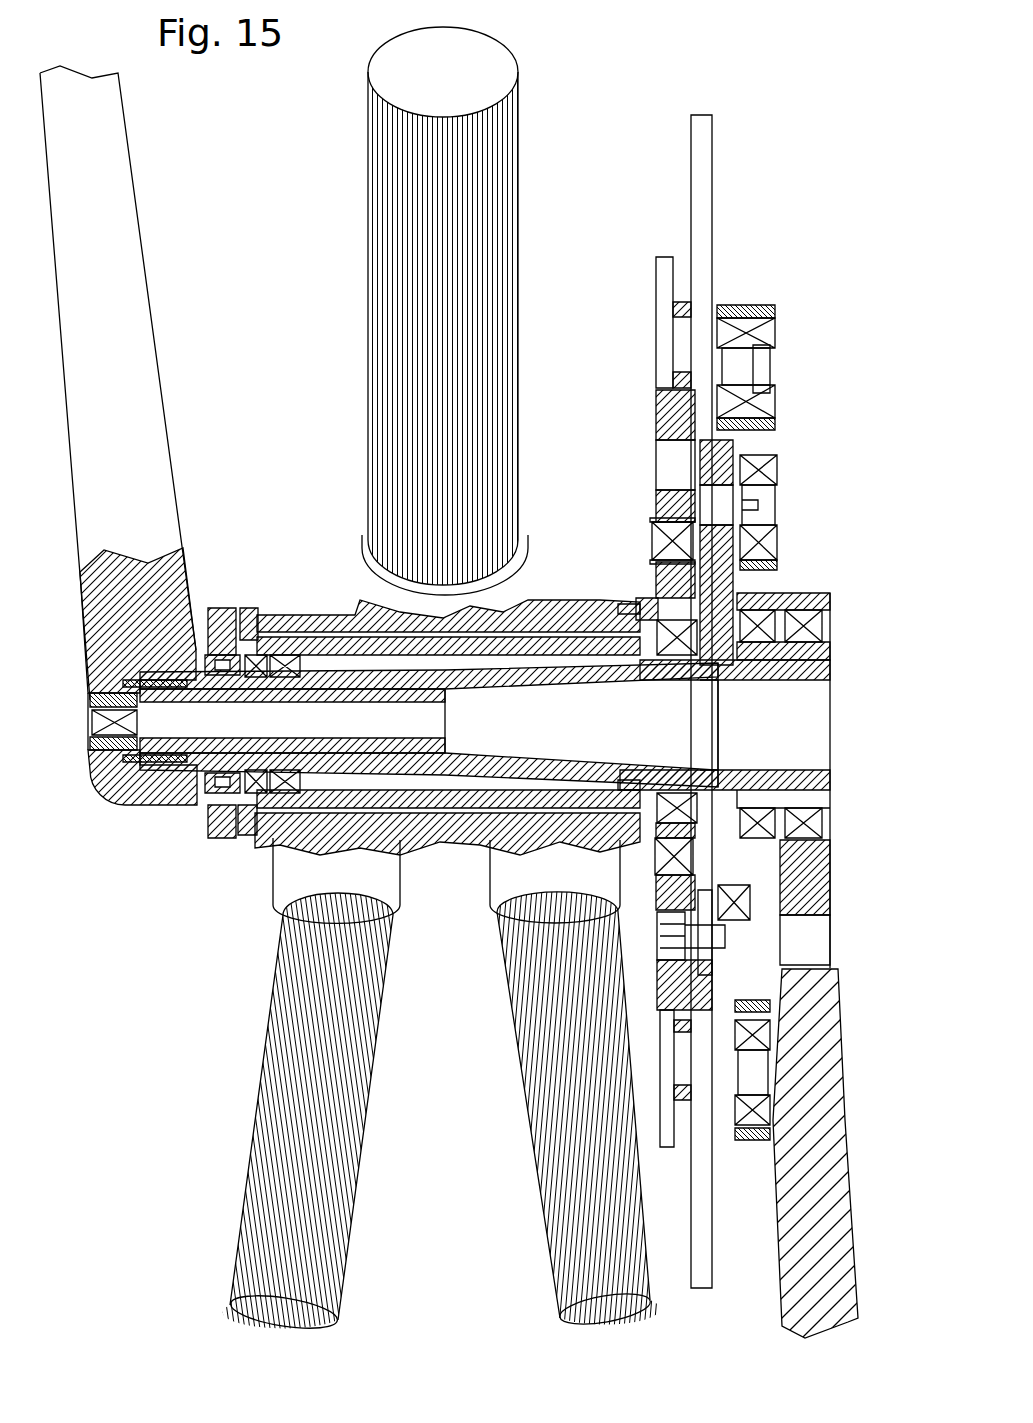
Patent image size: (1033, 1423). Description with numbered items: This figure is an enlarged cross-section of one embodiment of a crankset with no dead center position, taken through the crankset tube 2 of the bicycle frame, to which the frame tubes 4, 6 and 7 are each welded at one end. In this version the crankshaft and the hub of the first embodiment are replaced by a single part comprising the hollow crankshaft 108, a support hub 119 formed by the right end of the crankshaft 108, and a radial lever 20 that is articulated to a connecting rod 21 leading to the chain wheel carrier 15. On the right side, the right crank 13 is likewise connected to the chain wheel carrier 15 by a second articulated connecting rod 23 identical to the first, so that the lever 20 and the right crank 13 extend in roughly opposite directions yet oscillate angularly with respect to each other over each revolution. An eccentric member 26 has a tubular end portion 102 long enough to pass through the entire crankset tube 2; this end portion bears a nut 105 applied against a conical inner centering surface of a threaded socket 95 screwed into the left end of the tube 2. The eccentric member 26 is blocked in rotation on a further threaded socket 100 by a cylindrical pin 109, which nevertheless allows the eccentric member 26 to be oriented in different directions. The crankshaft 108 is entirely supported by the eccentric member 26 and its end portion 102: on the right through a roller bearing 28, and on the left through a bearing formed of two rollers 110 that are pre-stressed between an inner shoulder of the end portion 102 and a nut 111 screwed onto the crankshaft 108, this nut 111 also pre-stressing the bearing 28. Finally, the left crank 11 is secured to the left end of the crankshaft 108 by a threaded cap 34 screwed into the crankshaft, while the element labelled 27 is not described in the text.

The crankset tube 2 is at (296, 615).
The frame tube 4 is at (390, 336).
The frame tube 6 is at (262, 1226).
The frame tube 7 is at (565, 1193).
The left crank 11 is at (95, 498).
The right crank 13 is at (835, 1190).
The chain wheel carrier 15 is at (668, 403).
The radial lever 20 is at (735, 580).
The articulated connecting rod 21 is at (772, 428).
The articulated connecting rod 23 is at (755, 1001).
The eccentric member 26 is at (660, 551).
The bearing ring 27 is at (672, 525).
The roller bearing 28 is at (682, 795).
The threaded cap 34 is at (95, 703).
The threaded socket 95 is at (250, 603).
The threaded socket 100 is at (647, 618).
The tubular end portion 102 is at (360, 622).
The nut 105 is at (222, 610).
The hollow crankshaft 108 is at (472, 790).
The cylindrical pin 109 is at (665, 590).
The rollers 110 is at (262, 800).
The nut 111 is at (212, 824).
The support hub 119 is at (720, 680).